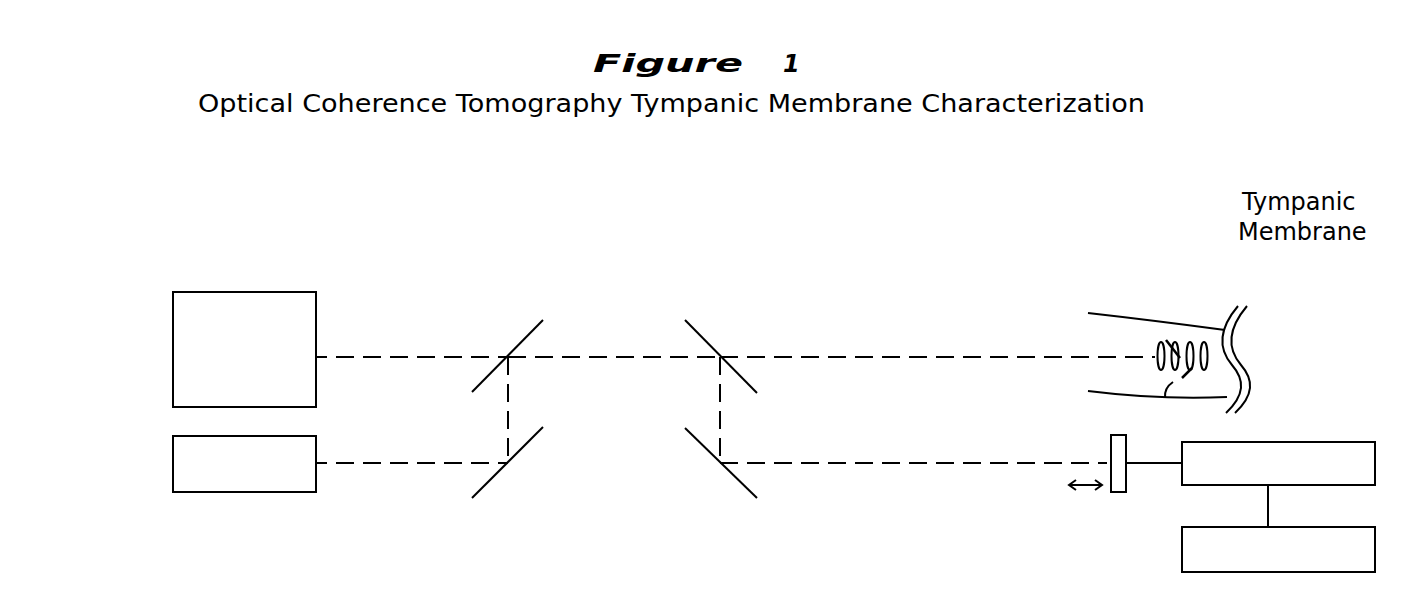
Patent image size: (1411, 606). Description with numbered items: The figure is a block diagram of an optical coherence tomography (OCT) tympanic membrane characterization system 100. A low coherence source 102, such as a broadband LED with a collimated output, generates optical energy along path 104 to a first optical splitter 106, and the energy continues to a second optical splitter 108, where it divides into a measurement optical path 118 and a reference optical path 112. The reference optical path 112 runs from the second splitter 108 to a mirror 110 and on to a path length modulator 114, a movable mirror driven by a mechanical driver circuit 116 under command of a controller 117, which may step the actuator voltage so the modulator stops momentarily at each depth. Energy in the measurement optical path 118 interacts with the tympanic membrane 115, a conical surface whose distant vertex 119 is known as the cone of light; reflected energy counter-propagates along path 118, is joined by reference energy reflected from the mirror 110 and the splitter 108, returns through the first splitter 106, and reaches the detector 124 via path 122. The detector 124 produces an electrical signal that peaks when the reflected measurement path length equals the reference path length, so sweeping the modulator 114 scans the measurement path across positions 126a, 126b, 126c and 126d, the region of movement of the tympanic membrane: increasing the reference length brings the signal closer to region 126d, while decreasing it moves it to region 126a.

The OCT tympanic membrane characterization system 100 is at (280, 207).
The low coherence source 102 is at (215, 349).
The path 104 is at (447, 418).
The first optical splitter 106 is at (506, 321).
The second optical splitter 108 is at (720, 322).
The mirror 110 is at (702, 471).
The reference optical path 112 is at (913, 477).
The path length modulator 114 is at (1092, 462).
The tympanic membrane 115 is at (1160, 330).
The mechanical driver circuit 116 is at (1278, 452).
The controller 117 is at (1278, 537).
The measurement optical path 118 is at (937, 344).
The distant vertex 119 is at (1190, 365).
The path 122 is at (412, 447).
The detector 124 is at (215, 464).
The displacement position 126a is at (1161, 342).
The displacement position 126b is at (1175, 342).
The displacement position 126c is at (1190, 342).
The displacement position 126d is at (1204, 342).